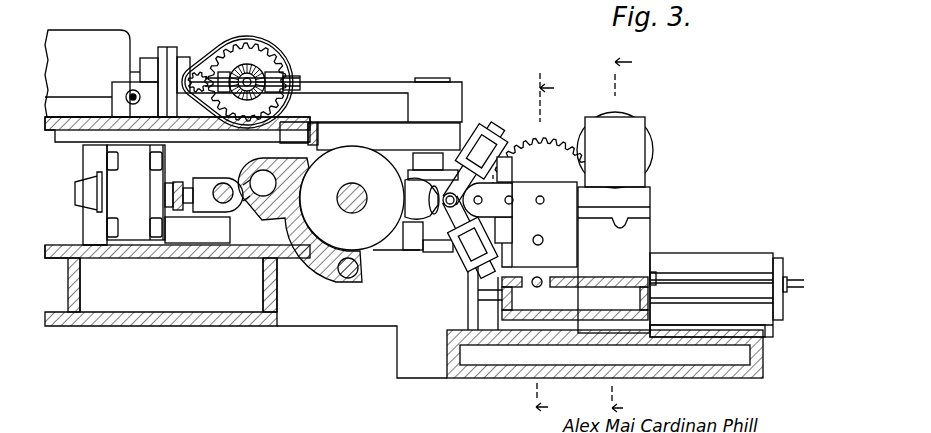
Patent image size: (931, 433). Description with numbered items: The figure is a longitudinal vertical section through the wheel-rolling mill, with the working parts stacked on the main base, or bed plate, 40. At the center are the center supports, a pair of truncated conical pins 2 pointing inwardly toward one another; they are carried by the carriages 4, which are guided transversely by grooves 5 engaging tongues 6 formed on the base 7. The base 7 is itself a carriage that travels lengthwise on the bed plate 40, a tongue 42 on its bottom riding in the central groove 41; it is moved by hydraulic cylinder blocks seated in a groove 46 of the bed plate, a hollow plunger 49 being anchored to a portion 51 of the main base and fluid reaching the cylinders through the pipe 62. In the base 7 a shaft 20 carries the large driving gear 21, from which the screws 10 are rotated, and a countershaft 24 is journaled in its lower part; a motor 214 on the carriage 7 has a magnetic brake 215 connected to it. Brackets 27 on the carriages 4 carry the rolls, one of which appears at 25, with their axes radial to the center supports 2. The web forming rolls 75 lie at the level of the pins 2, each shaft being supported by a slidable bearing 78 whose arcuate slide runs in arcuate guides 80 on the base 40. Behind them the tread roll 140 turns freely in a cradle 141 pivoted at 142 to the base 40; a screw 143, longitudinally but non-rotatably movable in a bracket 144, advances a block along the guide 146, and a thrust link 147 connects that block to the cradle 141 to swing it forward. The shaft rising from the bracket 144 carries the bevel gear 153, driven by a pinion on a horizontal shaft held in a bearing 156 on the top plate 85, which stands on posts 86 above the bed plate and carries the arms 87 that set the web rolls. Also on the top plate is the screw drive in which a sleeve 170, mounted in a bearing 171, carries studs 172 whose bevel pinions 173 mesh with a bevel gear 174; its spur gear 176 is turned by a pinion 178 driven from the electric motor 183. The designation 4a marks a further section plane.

The electric motor 183 is at (89, 40).
The bearing 156 is at (89, 63).
The bevel gear 153 is at (127, 98).
The pinion 178 is at (203, 78).
The bevel gear 174 is at (240, 74).
The sleeve 170 is at (249, 74).
The bearing 171 is at (277, 44).
The spur gear 176 is at (282, 62).
The bevel pinion 173 is at (300, 69).
The stud 172 is at (285, 103).
The arm 87 is at (368, 85).
The top plate 85 is at (372, 133).
The bracket 27 is at (469, 127).
The block 25 is at (481, 140).
The screw 10 is at (488, 178).
The driving gear 21 is at (548, 140).
The magnetic brake 215 is at (635, 137).
The motor 214 is at (653, 155).
The groove 5 is at (482, 196).
The tongue 6 is at (487, 201).
The shaft 20 is at (542, 200).
The center support pin 2 is at (452, 192).
The post 86 is at (83, 212).
The bracket 144 is at (122, 183).
The screw 143 is at (188, 184).
The thrust link 147 is at (256, 172).
The guide 146 is at (230, 237).
The web forming roll 75 is at (422, 198).
The slidable bearing 78 is at (413, 236).
The tread roll 140 is at (379, 228).
The cradle 141 is at (312, 270).
The pivot 142 is at (353, 285).
The arcuate guide 80 is at (430, 268).
The countershaft 24 is at (539, 287).
The base 7 is at (620, 255).
The groove 46 is at (719, 272).
The hollow plunger 49 is at (742, 283).
The main base portion 51 is at (782, 258).
The pipe 62 is at (794, 287).
The central groove 41 is at (765, 331).
The tongue 42 is at (620, 328).
The main base 40 is at (596, 372).
The carriage 4 is at (550, 245).
The section line 4a is at (633, 235).